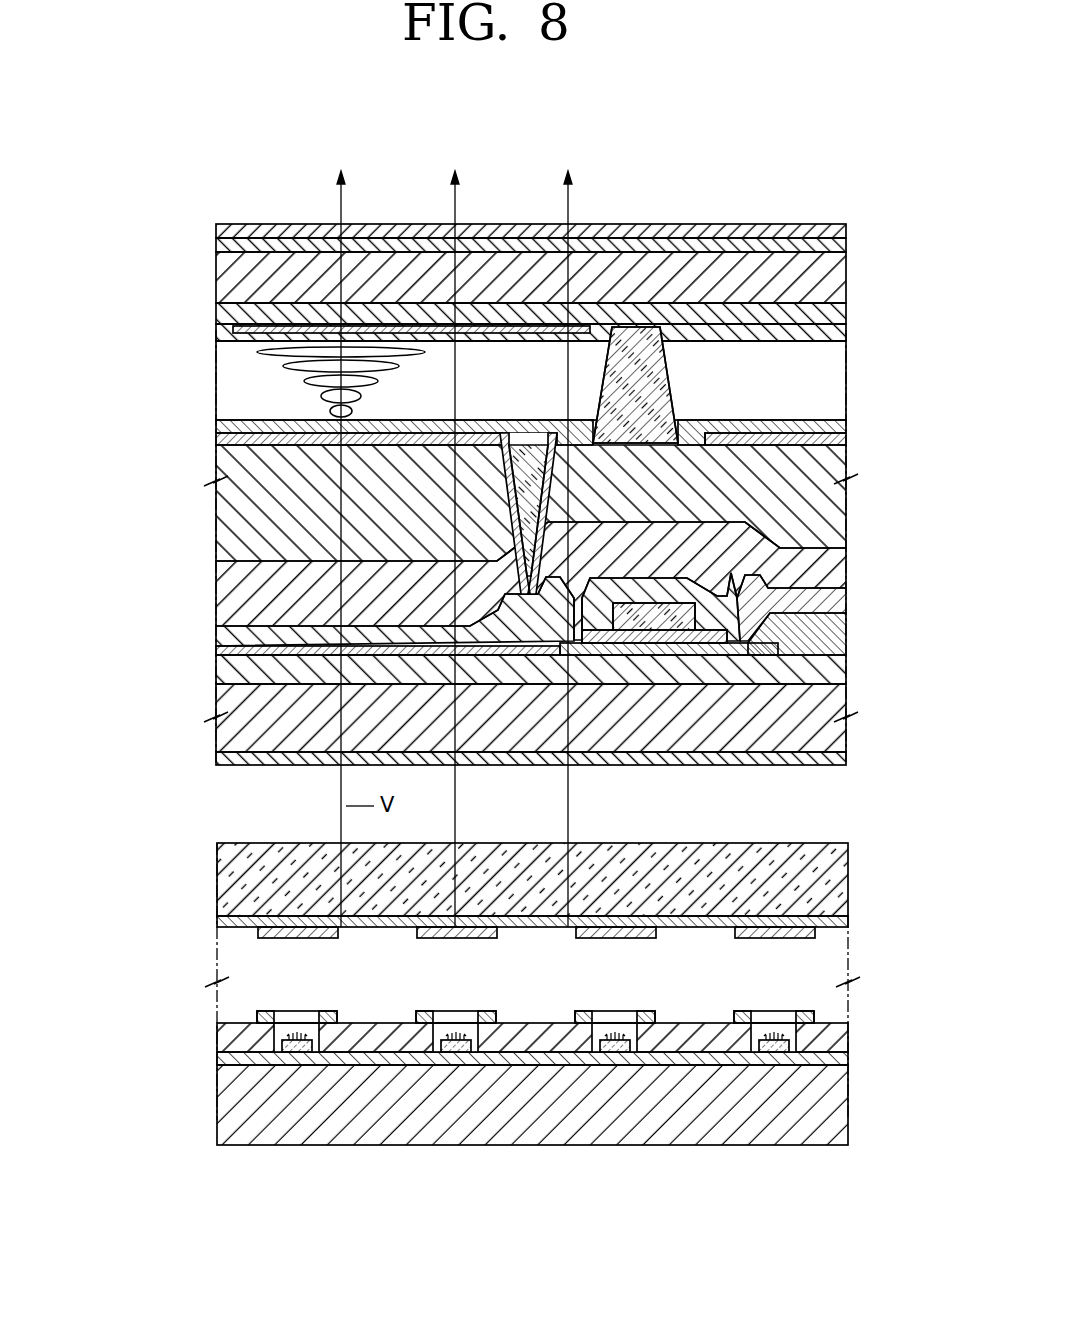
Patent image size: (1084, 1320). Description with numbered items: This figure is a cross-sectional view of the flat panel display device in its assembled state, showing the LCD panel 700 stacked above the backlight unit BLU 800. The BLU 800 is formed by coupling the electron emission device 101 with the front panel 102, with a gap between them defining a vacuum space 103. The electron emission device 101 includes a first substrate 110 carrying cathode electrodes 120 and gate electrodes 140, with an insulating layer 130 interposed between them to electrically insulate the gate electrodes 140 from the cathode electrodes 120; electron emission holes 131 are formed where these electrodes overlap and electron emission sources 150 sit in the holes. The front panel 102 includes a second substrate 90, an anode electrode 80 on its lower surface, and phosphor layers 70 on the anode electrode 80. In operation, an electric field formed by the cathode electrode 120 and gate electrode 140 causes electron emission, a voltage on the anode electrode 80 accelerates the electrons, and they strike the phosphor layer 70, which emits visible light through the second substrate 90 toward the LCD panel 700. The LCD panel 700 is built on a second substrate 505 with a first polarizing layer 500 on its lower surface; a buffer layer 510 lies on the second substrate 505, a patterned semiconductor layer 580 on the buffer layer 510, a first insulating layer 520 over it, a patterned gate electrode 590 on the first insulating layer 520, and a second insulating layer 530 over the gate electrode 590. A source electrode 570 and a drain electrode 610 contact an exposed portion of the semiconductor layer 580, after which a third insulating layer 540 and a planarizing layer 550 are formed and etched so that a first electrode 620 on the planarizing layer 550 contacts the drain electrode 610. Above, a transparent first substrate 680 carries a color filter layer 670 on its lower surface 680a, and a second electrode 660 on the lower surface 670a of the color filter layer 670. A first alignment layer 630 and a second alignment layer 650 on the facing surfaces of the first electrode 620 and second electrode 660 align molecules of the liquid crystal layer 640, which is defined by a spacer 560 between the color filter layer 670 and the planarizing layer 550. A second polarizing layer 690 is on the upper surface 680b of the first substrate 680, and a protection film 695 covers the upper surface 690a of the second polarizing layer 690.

The LCD panel 700 is at (833, 192).
The protection film 695 is at (846, 230).
The upper surface of second polarizing layer 690a is at (828, 245).
The second polarizing layer 690 is at (718, 250).
The upper surface of first substrate 680b is at (820, 286).
The first substrate 680 is at (834, 299).
The lower surface of first substrate 680a is at (838, 318).
The color filter layer 670 is at (596, 314).
The lower surface of color filter layer 670a is at (638, 324).
The second electrode 660 is at (505, 324).
The second alignment layer 650 is at (262, 334).
The liquid crystal layer 640 is at (240, 383).
The first alignment layer 630 is at (265, 425).
The first electrode 620 is at (494, 621).
The drain electrode 610 is at (574, 600).
The spacer 560 is at (657, 383).
The planarizing layer 550 is at (846, 477).
The third insulating layer 540 is at (832, 548).
The second insulating layer 530 is at (846, 602).
The first insulating layer 520 is at (846, 649).
The gate electrode 590 is at (655, 622).
The semiconductor layer 580 is at (680, 652).
The source electrode 570 is at (740, 653).
The buffer layer 510 is at (846, 671).
The second substrate 505 is at (830, 718).
The first polarizing layer 500 is at (846, 758).
The BLU 800 is at (112, 925).
The front panel 102 is at (515, 901).
The electron emission device 101 is at (521, 1084).
The vacuum space 103 is at (557, 983).
The second substrate 90 is at (846, 877).
The anode electrode 80 is at (846, 923).
The phosphor layer 70 is at (812, 936).
The insulating layer 130 is at (846, 1033).
The gate electrode 140 is at (742, 1024).
The electron emission source 150 is at (607, 1052).
The electron emission hole 131 is at (598, 1038).
The cathode electrode 120 is at (846, 1062).
The first substrate 110 is at (846, 1107).